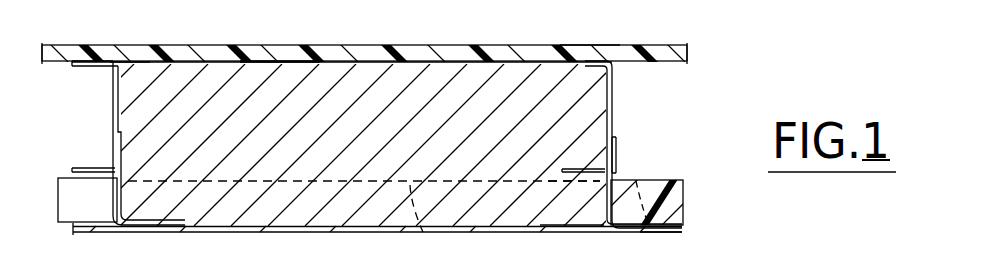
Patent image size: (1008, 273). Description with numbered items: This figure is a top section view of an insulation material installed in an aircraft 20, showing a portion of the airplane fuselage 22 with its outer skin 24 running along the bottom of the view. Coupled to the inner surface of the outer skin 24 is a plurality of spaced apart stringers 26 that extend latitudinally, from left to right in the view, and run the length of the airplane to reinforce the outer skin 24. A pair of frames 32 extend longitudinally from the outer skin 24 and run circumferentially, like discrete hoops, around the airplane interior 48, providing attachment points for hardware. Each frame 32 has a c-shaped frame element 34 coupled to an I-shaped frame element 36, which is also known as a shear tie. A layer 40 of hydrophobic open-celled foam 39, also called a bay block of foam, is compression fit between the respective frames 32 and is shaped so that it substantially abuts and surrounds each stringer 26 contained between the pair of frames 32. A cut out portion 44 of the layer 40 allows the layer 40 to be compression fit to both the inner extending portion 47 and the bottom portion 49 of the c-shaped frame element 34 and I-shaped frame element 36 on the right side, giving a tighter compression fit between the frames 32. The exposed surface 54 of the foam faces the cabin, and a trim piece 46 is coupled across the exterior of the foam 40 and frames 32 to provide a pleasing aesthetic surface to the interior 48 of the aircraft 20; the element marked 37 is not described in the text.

The aircraft 20 is at (742, 38).
The airplane fuselage 22 is at (60, 153).
The outer skin 24 is at (680, 234).
The stringers 26 is at (68, 189).
The frames 32 is at (110, 114).
The c-shaped frame element 34 is at (111, 77).
The I-shaped frame element 36 is at (615, 156).
The adhesive layer 37 is at (118, 63).
The open-celled foam 39 is at (417, 137).
The layer of open-celled foam 40 is at (224, 212).
The cut out portion 44 is at (550, 180).
The trim piece 46 is at (579, 52).
The inner extending portion 47 is at (575, 167).
The airplane interior 48 is at (470, 42).
The bottom portion 49 is at (583, 181).
The exposed surface 54 is at (282, 62).